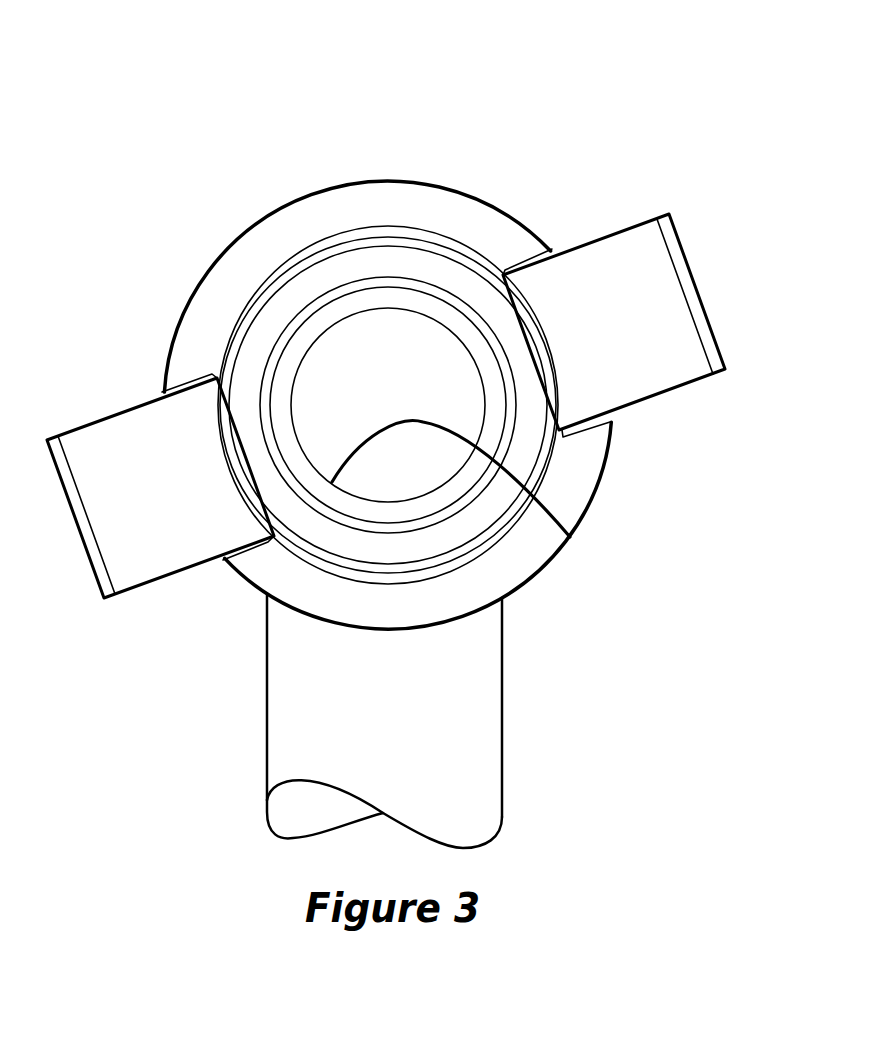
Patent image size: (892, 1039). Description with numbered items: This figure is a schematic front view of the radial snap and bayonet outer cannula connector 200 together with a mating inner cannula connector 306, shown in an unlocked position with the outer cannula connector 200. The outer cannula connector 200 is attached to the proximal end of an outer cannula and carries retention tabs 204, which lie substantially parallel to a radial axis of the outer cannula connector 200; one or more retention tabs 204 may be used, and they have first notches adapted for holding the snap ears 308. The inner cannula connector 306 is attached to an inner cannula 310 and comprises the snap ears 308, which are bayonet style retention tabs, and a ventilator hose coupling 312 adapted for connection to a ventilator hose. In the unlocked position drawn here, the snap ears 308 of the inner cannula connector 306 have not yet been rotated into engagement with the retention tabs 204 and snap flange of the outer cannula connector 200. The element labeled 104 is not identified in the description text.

The radial snap and bayonet outer cannula connector 200 is at (480, 116).
The retention tabs 204 is at (277, 210).
The inner cannula connector 306 is at (606, 224).
The snap ears 308 is at (675, 306).
The inner cannula 310 is at (570, 537).
The ventilator hose coupling 312 is at (258, 333).
The shaft 104 is at (503, 723).